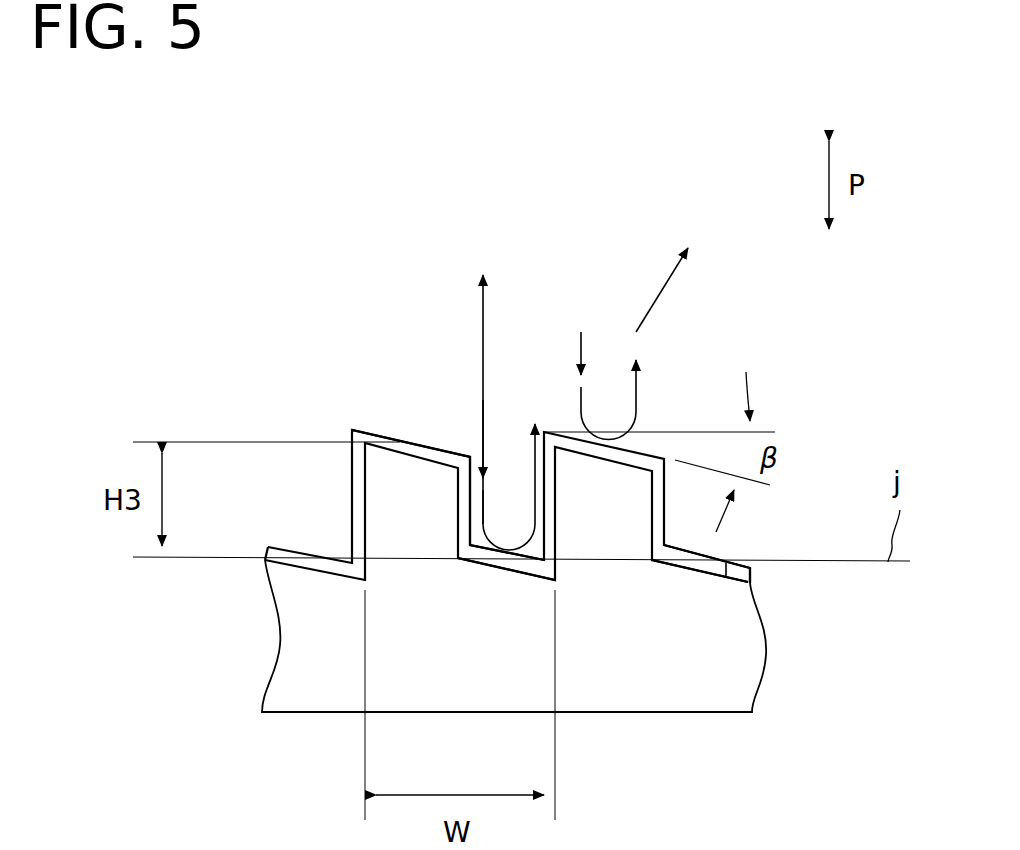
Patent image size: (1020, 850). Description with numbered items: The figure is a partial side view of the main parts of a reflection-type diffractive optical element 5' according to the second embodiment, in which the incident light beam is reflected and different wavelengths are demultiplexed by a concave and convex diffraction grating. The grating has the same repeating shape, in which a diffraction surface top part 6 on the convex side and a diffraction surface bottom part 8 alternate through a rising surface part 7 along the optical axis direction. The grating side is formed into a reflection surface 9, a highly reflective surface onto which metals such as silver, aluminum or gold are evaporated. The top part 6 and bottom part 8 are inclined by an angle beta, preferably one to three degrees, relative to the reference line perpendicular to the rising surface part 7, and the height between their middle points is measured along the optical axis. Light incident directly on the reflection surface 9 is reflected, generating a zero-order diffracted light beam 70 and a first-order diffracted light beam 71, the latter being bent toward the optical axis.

The diffractive optical element 5' is at (514, 698).
The diffraction surface top part 6 is at (368, 430).
The rising surface part 7 is at (470, 457).
The diffraction surface bottom part 8 is at (508, 567).
The reflection surface 9 is at (728, 562).
The 0-order diffracted light beam 70 is at (483, 308).
The 1-order diffracted light beam 71 is at (670, 282).